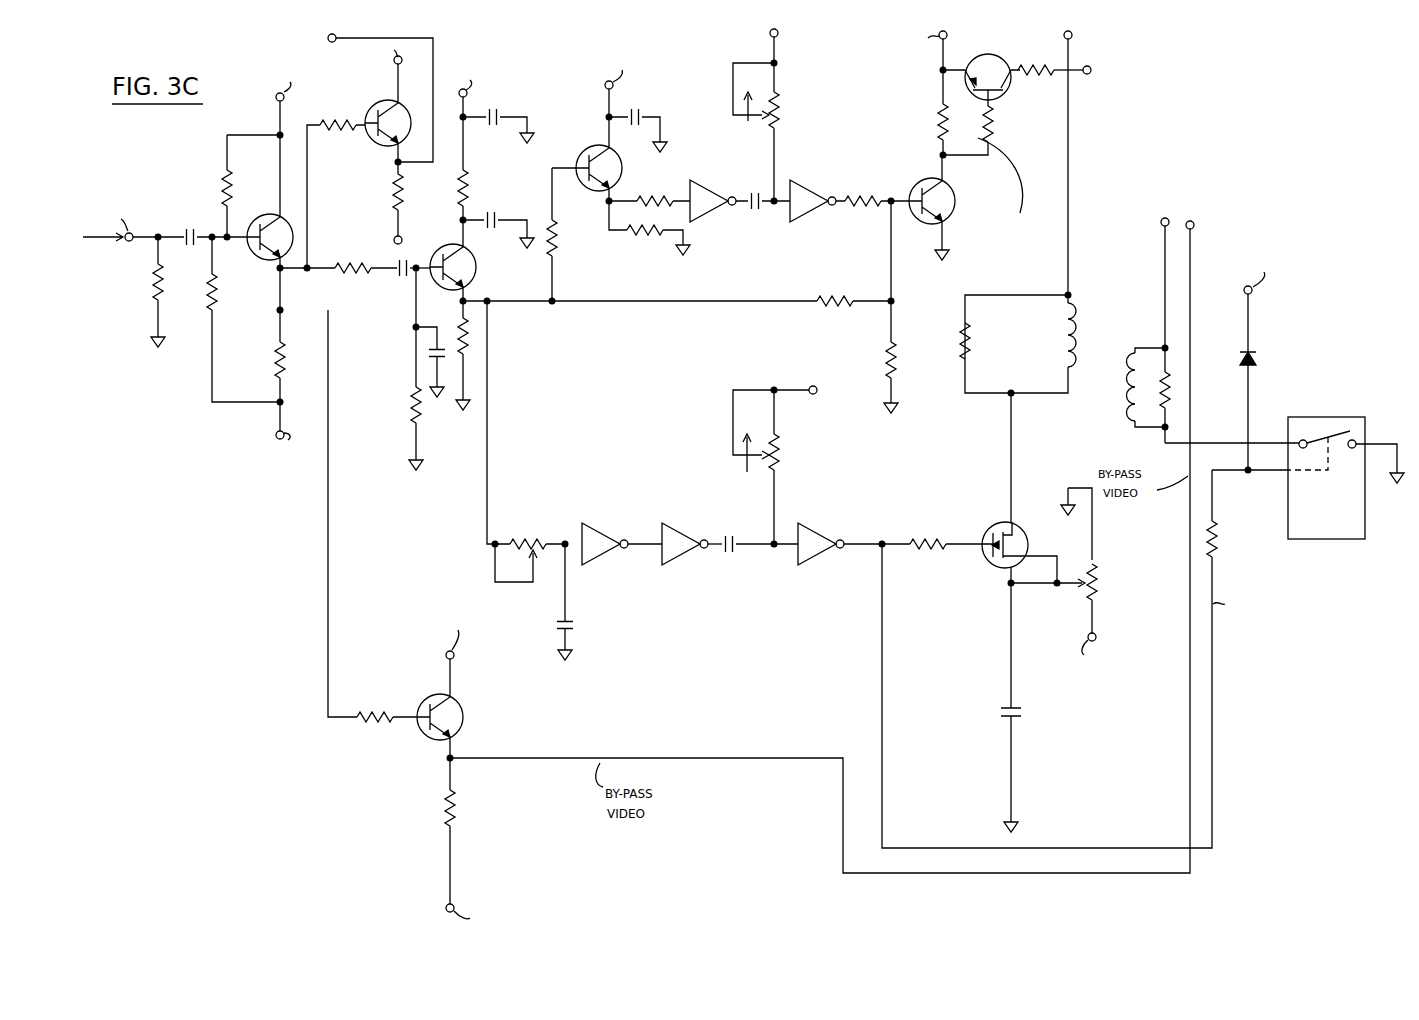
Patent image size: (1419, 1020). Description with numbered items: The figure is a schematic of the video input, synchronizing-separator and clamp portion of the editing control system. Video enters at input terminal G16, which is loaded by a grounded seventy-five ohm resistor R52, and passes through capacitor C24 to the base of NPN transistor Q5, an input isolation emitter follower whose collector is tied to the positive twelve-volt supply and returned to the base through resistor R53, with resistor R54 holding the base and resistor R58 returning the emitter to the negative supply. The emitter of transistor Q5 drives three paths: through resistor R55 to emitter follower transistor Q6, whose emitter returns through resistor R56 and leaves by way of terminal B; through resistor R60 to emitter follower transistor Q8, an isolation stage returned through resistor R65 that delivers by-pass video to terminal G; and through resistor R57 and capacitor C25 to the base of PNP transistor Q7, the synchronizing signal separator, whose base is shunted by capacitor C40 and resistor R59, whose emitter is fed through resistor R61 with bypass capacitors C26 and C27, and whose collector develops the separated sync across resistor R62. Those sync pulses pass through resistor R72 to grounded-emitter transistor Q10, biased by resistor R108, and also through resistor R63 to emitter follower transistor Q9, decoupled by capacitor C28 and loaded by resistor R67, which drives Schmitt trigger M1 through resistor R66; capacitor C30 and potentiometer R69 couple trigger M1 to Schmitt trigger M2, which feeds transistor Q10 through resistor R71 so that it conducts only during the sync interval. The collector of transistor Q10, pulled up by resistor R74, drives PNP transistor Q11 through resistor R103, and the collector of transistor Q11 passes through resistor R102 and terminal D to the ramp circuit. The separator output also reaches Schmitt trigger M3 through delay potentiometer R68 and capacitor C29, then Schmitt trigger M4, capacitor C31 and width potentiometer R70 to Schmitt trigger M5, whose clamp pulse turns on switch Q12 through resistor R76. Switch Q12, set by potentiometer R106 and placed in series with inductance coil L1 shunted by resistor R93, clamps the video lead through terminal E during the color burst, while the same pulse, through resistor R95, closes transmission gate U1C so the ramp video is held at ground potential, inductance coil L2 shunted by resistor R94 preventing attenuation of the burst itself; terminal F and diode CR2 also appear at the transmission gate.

The input terminal G16 is at (125, 243).
The capacitor C24 is at (201, 214).
The grounded resistor R52 is at (155, 283).
The resistor R54 is at (209, 284).
The resistor R53 is at (224, 182).
The NPN transistor Q5 is at (268, 215).
The resistor R58 is at (275, 356).
The resistor R57 is at (358, 276).
The capacitor C25 is at (403, 275).
The resistor R55 is at (357, 131).
The NPN emitter follower transistor Q6 is at (385, 102).
The terminal B is at (327, 38).
The resistor R56 is at (395, 176).
The resistor R61 is at (458, 195).
The grounded capacitor C26 is at (504, 112).
The grounded capacitor C27 is at (508, 217).
The PNP transistor Q7 is at (473, 250).
The grounded resistor R62 is at (478, 335).
The grounded capacitor C40 is at (432, 352).
The grounded resistor R59 is at (409, 410).
The NPN transistor Q9 is at (596, 145).
The resistor R63 is at (557, 240).
The grounded capacitor C28 is at (634, 110).
The resistor R66 is at (665, 195).
The Schmitt trigger M1 is at (714, 190).
The grounded resistor R67 is at (658, 240).
The capacitor C30 is at (768, 208).
The second Schmitt trigger M2 is at (815, 190).
The potentiometer R69 is at (780, 112).
The resistor R71 is at (863, 198).
The grounded emitter transistor Q10 is at (953, 194).
The resistor R72 is at (838, 296).
The grounded resistor R108 is at (895, 349).
The resistor R74 is at (937, 124).
The PNP transistor Q11 is at (990, 57).
The resistor R102 is at (1050, 66).
The terminal D is at (1092, 73).
The terminal E is at (1072, 32).
The resistor R103 is at (992, 131).
The inductance coil L1 is at (1080, 298).
The resistor R93 is at (961, 338).
The terminal F is at (1161, 218).
The terminal G is at (1205, 214).
The inductance coil L2 is at (1127, 407).
The resistor R94 is at (1172, 392).
The diode 1N4148 CR2 is at (1257, 348).
The transmission gate U1C is at (1308, 478).
The resistor R95 is at (1215, 525).
The potentiometer R106 is at (1098, 583).
The switch Q12 is at (1000, 522).
The resistor R76 is at (950, 520).
The Schmitt trigger M5 is at (818, 530).
The delay potentiometer R68 is at (539, 538).
The Schmitt trigger M3 is at (605, 530).
The second Schmitt trigger M4 is at (688, 528).
The capacitor C31 is at (743, 520).
The grounded capacitor C29 is at (575, 620).
The potentiometer R70 is at (777, 445).
The emitter follower transistor Q8 is at (455, 701).
The resistor R60 is at (386, 710).
The resistor R65 is at (455, 796).